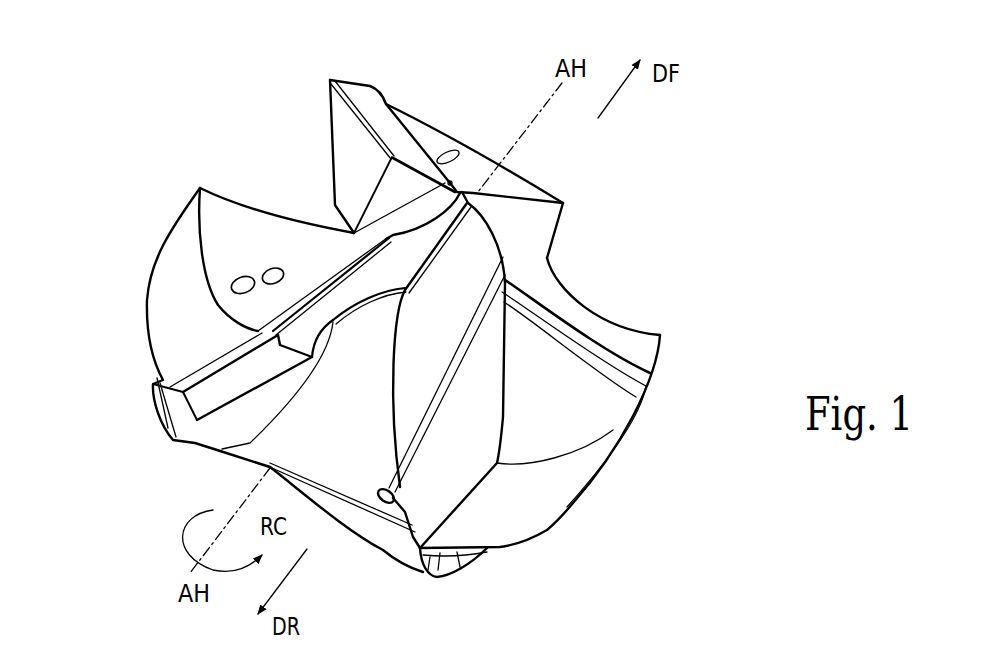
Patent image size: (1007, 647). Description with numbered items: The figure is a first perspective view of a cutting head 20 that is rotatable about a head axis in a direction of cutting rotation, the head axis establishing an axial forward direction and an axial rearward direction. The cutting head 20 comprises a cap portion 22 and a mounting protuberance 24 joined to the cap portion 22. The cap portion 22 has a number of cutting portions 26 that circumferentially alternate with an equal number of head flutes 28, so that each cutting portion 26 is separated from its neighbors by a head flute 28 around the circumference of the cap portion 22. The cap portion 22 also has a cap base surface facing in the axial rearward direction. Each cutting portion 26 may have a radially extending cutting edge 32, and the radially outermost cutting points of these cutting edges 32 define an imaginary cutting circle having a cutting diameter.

The cutting head 20 is at (683, 188).
The cap portion 22 is at (223, 228).
The mounting protuberance 24 is at (176, 411).
The cutting portion 26 is at (383, 107).
The head flute 28 is at (303, 207).
The radially extending cutting edge 32 is at (380, 115).